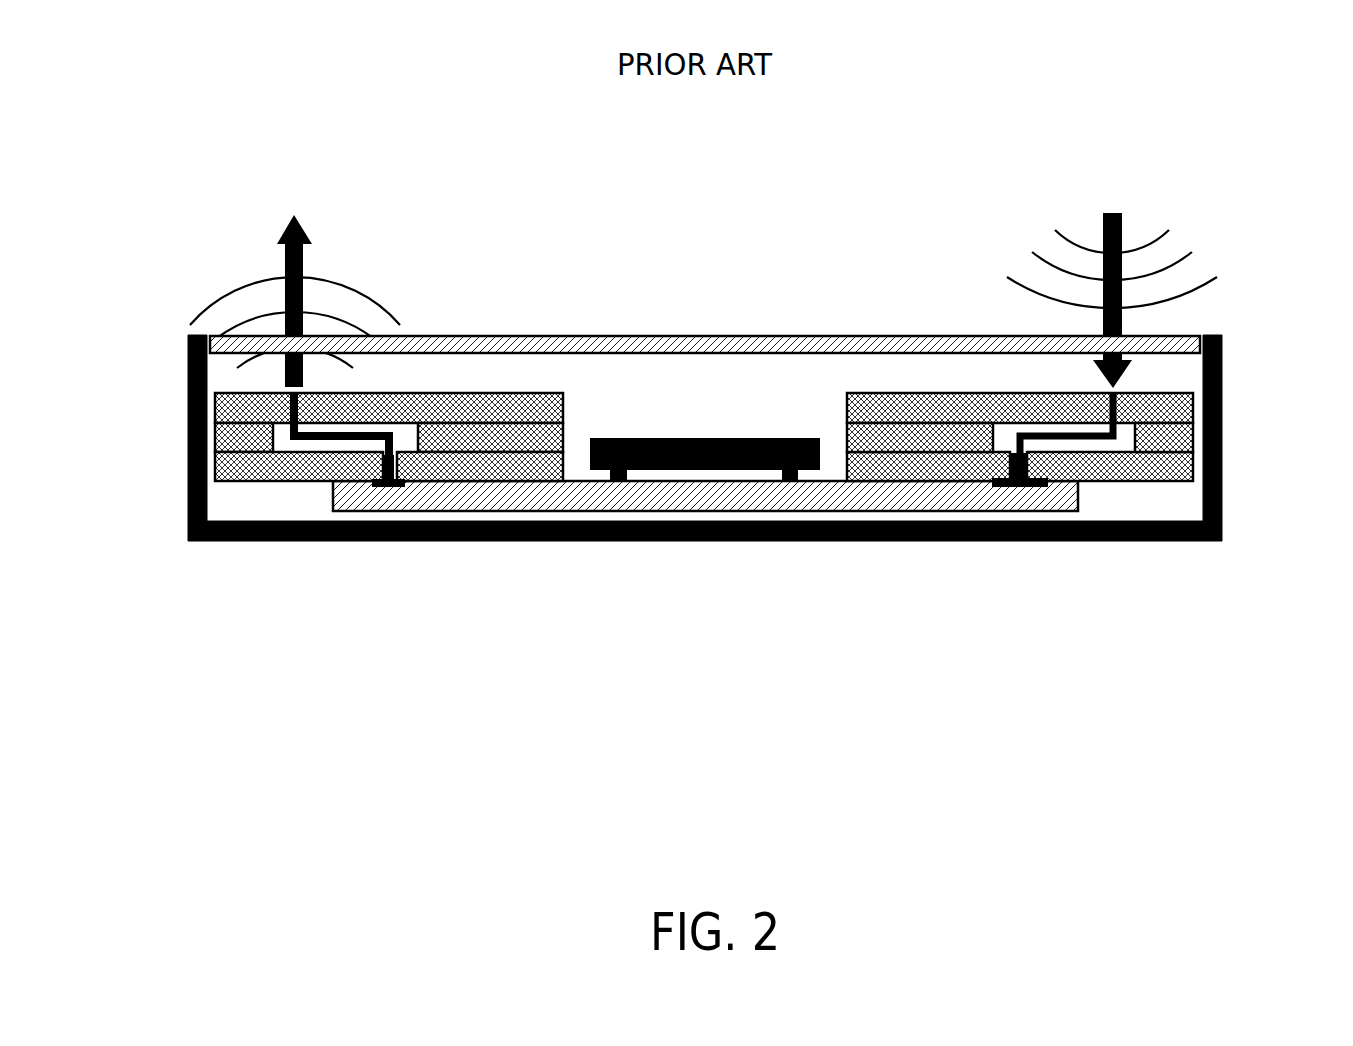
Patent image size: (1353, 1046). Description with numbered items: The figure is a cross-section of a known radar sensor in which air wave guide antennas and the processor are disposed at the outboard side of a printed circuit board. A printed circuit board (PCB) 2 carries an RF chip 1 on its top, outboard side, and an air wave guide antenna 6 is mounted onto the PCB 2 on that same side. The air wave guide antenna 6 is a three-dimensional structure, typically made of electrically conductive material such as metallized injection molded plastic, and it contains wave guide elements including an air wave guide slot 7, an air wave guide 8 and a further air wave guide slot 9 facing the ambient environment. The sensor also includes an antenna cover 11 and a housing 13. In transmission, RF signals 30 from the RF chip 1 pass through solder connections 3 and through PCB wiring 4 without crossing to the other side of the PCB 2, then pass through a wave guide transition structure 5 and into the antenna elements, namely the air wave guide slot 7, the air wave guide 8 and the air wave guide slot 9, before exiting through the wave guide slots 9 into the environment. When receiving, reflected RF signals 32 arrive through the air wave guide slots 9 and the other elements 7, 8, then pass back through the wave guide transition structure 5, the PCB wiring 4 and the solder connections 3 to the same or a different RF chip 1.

The RF chip 1 is at (707, 470).
The printed circuit board 2 is at (703, 495).
The solder connections 3 is at (618, 472).
The PCB wiring 4 is at (505, 472).
The wave guide transition structure 5 is at (391, 481).
The air wave guide antenna 6 is at (273, 481).
The air wave guide slot 7 is at (380, 466).
The air wave guide 8 is at (337, 435).
The air wave guide slot 9 is at (295, 428).
The antenna cover 11 is at (703, 343).
The housing 13 is at (1222, 435).
The RF signals 30 is at (282, 273).
The reflected RF signals 32 is at (1140, 290).